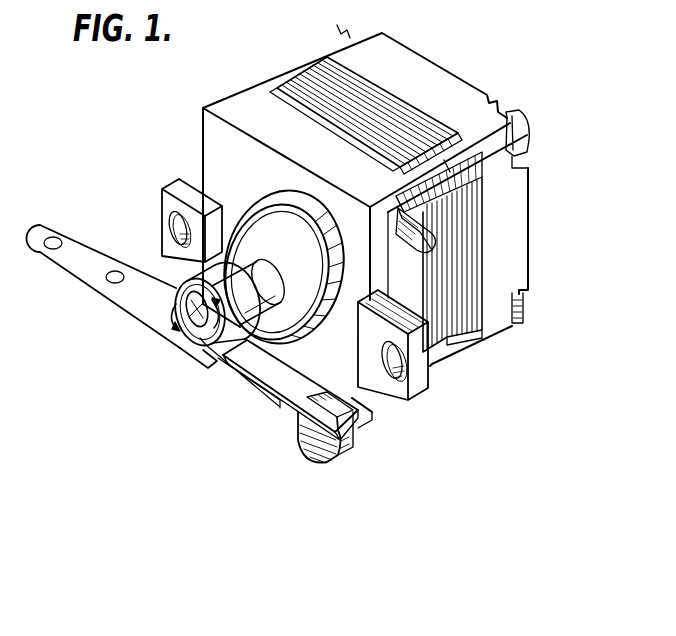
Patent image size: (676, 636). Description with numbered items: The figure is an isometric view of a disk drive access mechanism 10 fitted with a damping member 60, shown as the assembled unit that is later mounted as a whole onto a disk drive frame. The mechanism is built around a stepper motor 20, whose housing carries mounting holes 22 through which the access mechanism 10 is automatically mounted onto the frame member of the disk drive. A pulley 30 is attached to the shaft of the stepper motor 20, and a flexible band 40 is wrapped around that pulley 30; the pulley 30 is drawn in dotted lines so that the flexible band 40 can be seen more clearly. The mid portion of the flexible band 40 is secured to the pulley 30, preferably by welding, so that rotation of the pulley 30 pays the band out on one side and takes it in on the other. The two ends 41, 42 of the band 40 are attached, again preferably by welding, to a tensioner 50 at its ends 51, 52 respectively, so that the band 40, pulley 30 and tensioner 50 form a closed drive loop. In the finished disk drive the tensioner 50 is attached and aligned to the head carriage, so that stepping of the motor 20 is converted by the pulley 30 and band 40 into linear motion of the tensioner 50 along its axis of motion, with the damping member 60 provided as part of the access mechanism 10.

The disk drive access mechanism 10 is at (182, 142).
The stepper motor 20 is at (417, 95).
The mounting holes 22 is at (168, 222).
The pulley 30 is at (180, 350).
The flexible band 40 is at (248, 373).
The end of the flexible band 41 is at (355, 448).
The end of the flexible band 42 is at (164, 305).
The tensioner 50 is at (73, 260).
The end of the tensioner 51 is at (362, 432).
The end of the tensioner 52 is at (127, 292).
The damping member 60 is at (185, 360).